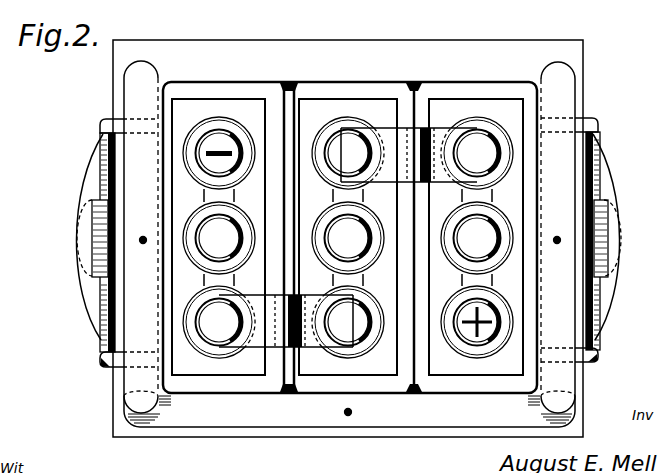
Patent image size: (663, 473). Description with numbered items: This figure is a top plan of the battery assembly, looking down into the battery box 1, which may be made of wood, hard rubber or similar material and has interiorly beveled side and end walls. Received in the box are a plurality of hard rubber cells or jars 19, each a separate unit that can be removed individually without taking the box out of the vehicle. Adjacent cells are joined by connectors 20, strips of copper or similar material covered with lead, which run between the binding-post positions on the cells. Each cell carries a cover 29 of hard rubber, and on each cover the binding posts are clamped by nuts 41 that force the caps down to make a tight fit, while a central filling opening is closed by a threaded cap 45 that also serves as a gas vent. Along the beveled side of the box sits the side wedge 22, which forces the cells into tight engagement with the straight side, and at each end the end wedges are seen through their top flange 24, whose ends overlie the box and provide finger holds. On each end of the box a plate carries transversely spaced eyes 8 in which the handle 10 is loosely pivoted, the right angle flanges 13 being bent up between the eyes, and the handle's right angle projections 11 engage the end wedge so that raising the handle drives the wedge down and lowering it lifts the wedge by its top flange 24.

The battery box 1 is at (347, 431).
The transversely spaced eyes 8 is at (98, 143).
The handle 10 is at (102, 292).
The right angle projections 11 is at (120, 123).
The right angle flanges 13 is at (88, 245).
The cells or jars 19 is at (268, 83).
The connectors 20 is at (440, 134).
The side wedge 22 is at (349, 332).
The top flange 24 is at (349, 242).
The cover 29 is at (472, 110).
The nuts 41 is at (348, 237).
The cap 45 is at (448, 240).